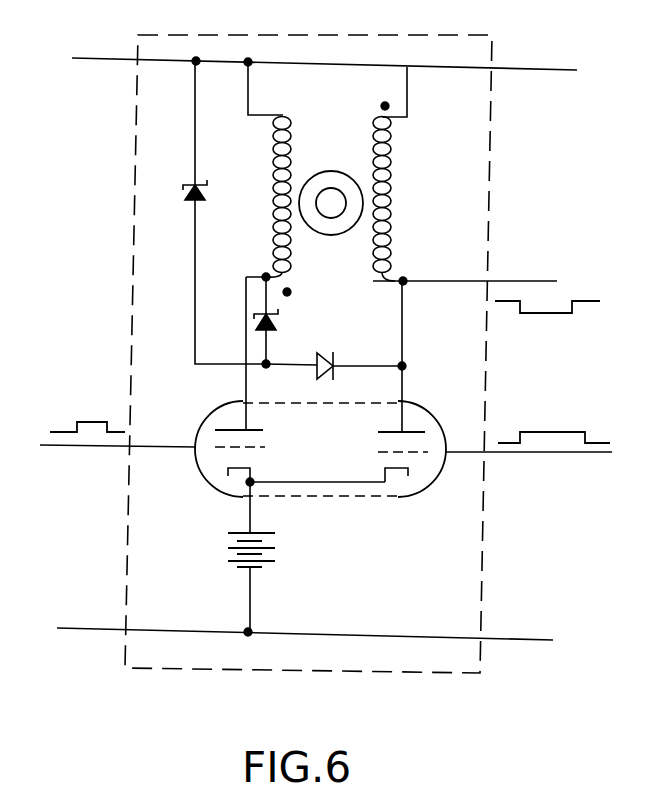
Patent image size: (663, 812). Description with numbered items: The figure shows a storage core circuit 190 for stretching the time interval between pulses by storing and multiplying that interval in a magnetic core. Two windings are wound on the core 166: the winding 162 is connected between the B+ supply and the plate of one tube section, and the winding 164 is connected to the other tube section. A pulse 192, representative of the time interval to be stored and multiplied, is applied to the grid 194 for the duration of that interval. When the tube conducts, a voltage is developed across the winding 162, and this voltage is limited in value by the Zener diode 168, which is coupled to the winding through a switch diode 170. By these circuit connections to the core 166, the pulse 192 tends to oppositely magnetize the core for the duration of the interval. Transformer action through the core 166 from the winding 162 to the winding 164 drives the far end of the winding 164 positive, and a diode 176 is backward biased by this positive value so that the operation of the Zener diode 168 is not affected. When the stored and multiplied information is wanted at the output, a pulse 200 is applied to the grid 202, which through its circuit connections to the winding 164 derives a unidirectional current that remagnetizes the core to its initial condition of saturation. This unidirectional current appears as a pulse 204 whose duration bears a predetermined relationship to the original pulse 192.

The winding 162 is at (273, 152).
The winding 164 is at (392, 165).
The core 166 is at (312, 235).
The Zener diode 168 is at (200, 203).
The switch diode 170 is at (278, 322).
The diode 176 is at (322, 350).
The storage core circuit 190 is at (212, 589).
The pulse 192 is at (92, 420).
The grid 194 is at (218, 450).
The pulse 200 is at (560, 430).
The grid 202 is at (418, 457).
The pulse 204 is at (545, 314).